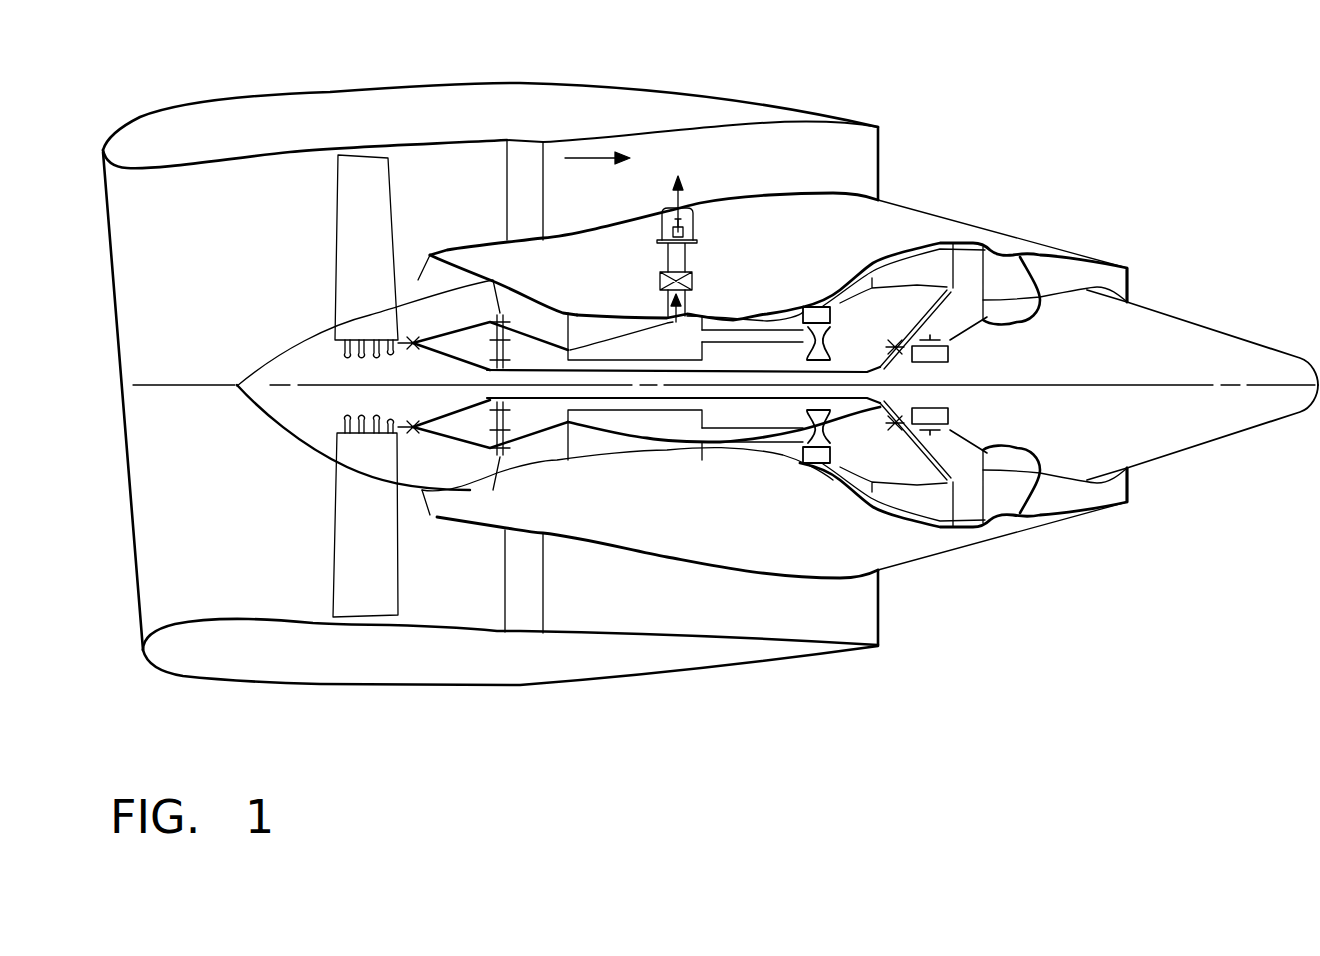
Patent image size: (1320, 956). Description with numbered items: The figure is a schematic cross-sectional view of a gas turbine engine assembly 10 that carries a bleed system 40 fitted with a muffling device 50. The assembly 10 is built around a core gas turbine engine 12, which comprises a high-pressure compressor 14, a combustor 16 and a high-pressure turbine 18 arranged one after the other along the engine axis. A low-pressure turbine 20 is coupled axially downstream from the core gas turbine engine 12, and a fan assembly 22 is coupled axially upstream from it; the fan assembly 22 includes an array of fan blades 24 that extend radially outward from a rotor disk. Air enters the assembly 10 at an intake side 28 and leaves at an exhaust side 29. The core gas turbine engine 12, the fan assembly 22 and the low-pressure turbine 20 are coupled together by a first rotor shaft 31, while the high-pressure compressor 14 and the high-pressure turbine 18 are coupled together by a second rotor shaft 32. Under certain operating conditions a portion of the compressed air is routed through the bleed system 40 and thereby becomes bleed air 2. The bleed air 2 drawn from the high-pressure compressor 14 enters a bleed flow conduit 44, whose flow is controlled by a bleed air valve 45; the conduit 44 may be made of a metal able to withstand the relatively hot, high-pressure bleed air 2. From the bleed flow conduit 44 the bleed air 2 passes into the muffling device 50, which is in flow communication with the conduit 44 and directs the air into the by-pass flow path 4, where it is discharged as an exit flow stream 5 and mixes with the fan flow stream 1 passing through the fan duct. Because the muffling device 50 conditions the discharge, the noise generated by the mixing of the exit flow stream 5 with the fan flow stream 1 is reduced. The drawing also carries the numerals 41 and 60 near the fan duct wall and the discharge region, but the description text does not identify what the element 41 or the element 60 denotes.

The gas turbine engine assembly 10 is at (771, 55).
The fan flow stream 1 is at (590, 158).
The bleed air 2 is at (658, 331).
The by-pass flow path 4 is at (641, 128).
The exit flow stream 5 is at (672, 196).
The core gas turbine engine 12 is at (786, 306).
The high-pressure compressor 14 is at (588, 327).
The combustor 16 is at (773, 307).
The high-pressure turbine 18 is at (815, 465).
The low-pressure turbine 20 is at (910, 263).
The fan assembly 22 is at (460, 287).
The fan blades 24 is at (357, 227).
The intake side 28 is at (85, 197).
The exhaust side 29 is at (1145, 500).
The first rotor shaft 31 is at (576, 398).
The second rotor shaft 32 is at (783, 433).
The bleed system 40 is at (719, 244).
The core cowl 41 is at (777, 193).
The bleed flow conduit 44 is at (663, 253).
The bleed air valve 45 is at (658, 280).
The muffling device 50 is at (661, 209).
The muffler discharge flow 60 is at (697, 194).